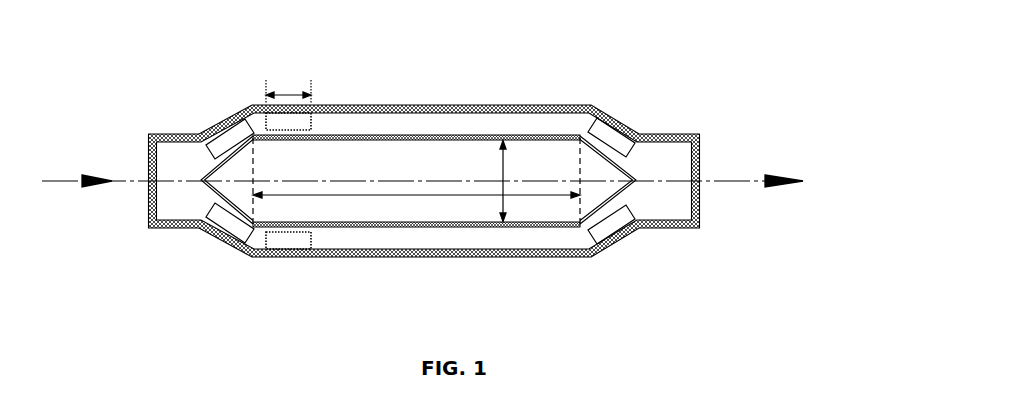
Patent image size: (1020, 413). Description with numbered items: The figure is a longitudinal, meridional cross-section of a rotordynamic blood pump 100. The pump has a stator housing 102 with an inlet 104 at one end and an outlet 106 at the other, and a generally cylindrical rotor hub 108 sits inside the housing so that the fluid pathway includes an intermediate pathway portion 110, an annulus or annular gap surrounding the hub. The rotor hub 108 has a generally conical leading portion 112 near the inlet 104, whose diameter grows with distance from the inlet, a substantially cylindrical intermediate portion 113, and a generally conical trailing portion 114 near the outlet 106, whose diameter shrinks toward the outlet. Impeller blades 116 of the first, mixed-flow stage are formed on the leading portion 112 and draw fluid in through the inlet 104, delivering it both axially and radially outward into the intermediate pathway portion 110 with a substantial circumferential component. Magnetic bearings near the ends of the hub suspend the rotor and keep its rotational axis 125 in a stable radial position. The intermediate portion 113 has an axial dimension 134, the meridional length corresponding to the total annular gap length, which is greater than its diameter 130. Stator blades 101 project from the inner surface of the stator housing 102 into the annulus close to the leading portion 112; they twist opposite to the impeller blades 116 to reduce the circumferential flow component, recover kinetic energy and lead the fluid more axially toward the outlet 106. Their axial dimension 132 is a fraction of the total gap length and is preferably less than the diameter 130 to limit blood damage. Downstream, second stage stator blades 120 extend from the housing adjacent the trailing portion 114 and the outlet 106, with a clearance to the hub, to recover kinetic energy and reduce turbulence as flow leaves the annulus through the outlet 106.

The rotordynamic blood pump 100 is at (672, 19).
The stator blade 101 is at (288, 243).
The stator housing 102 is at (453, 253).
The inlet 104 is at (143, 195).
The outlet 106 is at (715, 222).
The rotor hub 108 is at (417, 137).
The intermediate pathway portion 110 is at (517, 244).
The leading portion 112 is at (233, 197).
The intermediate portion 113 is at (413, 214).
The trailing portion 114 is at (593, 192).
The impeller blade 116 is at (227, 142).
The second stage stator blade 120 is at (607, 231).
The rotational axis 125 is at (681, 180).
The diameter 130 is at (518, 181).
The axial dimension of the stator blade 132 is at (288, 84).
The axial dimension 134 is at (416, 181).